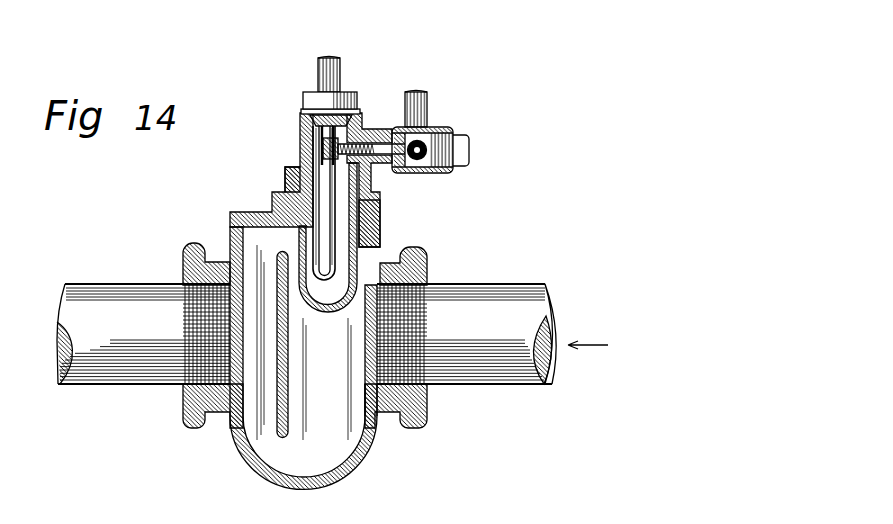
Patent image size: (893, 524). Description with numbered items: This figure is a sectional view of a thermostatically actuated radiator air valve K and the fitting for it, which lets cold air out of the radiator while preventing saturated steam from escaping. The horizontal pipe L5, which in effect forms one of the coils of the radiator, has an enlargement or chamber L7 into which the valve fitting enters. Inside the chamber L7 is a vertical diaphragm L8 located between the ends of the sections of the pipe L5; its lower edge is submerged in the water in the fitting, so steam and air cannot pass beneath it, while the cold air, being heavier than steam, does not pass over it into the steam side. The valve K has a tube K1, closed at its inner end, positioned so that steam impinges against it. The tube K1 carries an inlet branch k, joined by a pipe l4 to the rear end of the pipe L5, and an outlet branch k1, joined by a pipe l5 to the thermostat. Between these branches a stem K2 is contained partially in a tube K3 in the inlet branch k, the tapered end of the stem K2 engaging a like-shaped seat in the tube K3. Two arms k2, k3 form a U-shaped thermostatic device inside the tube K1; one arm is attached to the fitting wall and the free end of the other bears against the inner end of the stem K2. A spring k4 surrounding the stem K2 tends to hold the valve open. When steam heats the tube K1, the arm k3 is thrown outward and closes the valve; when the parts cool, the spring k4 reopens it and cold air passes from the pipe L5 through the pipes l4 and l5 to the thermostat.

The horizontal pipe L5 is at (491, 292).
The chamber L7 is at (342, 484).
The vertical diaphragm L8 is at (278, 412).
The thermostatically controlled air valve K is at (321, 157).
The tube K1 is at (360, 263).
The stem K2 is at (366, 128).
The tube K3 is at (373, 165).
The inlet branch k is at (385, 128).
The outlet branch k1 is at (310, 96).
The thermostatic arm k2 is at (288, 186).
The thermostatic arm k3 is at (335, 305).
The spring k4 is at (378, 225).
The pipe l4 is at (426, 103).
The pipe l5 is at (336, 58).